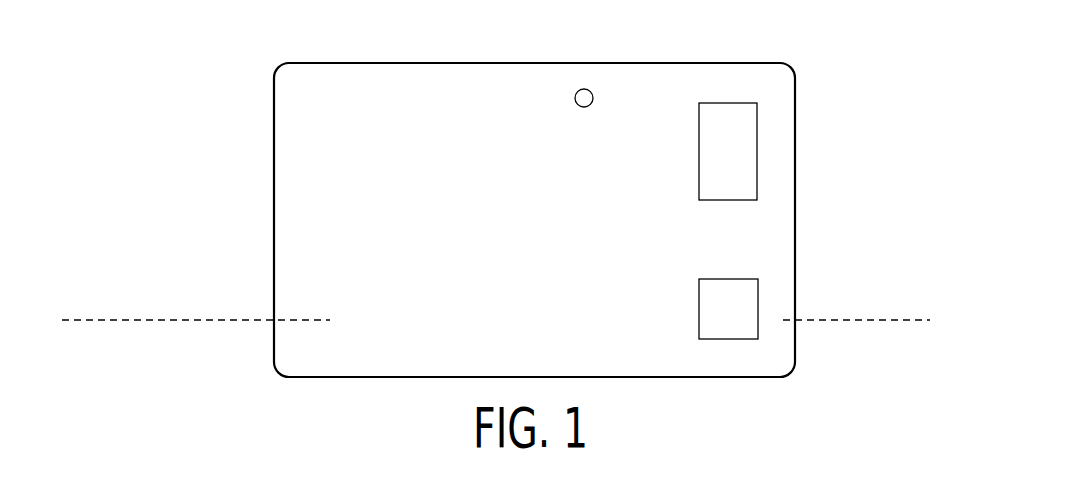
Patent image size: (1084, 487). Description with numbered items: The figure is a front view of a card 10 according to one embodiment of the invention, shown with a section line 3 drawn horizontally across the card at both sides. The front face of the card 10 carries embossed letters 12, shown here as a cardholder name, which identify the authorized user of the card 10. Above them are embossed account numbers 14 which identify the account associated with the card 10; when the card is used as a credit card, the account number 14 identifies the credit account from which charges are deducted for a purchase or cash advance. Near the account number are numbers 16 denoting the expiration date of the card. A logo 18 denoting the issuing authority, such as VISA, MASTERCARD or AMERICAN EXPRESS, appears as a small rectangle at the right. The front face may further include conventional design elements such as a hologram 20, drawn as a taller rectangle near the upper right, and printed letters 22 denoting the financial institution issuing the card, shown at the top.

The card 10 is at (762, 63).
The embossed letters 12 is at (416, 335).
The embossed account numbers 14 is at (416, 258).
The numbers denoting the expiration date 16 is at (692, 273).
The logo 18 is at (758, 320).
The hologram 20 is at (757, 147).
The printed letters 22 is at (600, 121).
The section line 3- 3 is at (498, 318).